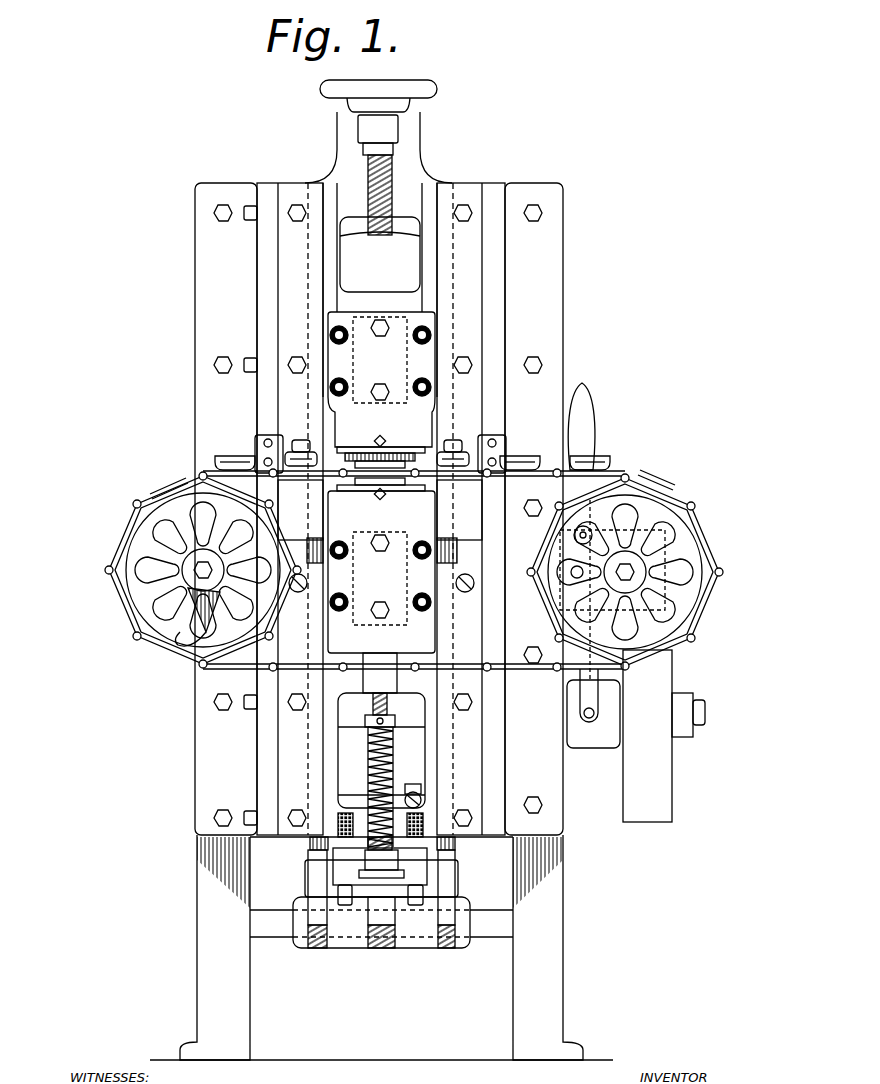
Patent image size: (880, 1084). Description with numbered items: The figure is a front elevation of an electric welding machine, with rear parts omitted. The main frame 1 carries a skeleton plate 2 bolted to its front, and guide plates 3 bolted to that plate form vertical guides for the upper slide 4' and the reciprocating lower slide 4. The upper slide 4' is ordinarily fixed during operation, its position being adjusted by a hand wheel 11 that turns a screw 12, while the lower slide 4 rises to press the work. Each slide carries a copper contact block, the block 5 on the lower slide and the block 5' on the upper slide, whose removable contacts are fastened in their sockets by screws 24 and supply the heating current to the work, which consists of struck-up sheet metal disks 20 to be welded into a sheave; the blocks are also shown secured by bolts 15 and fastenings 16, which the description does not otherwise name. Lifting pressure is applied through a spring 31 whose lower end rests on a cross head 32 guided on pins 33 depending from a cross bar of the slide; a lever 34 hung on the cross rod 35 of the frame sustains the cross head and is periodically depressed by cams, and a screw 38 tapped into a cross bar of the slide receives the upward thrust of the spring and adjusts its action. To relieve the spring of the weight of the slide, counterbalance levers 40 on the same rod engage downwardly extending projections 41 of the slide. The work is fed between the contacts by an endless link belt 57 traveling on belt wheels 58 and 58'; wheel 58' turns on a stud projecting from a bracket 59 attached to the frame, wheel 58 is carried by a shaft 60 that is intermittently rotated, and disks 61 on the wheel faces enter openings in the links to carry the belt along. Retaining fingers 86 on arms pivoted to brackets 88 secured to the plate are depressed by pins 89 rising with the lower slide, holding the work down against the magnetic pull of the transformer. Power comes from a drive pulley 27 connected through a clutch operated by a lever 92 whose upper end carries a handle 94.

The main frame 1 is at (555, 876).
The skeleton plate 2 is at (226, 190).
The guide plates 3 is at (295, 190).
The lower slide 4 is at (312, 700).
The upper slide 4' is at (422, 267).
The contact block for the lower slide 5 is at (381, 572).
The contact block for the upper slide 5' is at (381, 401).
The hand wheel 11 is at (418, 92).
The screw 12 is at (393, 168).
The die clamping bolts 15 is at (385, 330).
The holder fastening bolts 16 is at (428, 333).
The sheet metal disks 20 is at (507, 458).
The screws 24 is at (377, 440).
The drive pulley 27 is at (668, 802).
The spring 31 is at (394, 750).
The cross head 32 is at (383, 872).
The guide pins 33 is at (340, 843).
The lever 34 is at (386, 916).
The cross rod 35 is at (500, 930).
The screw 38 is at (392, 690).
The levers 40 is at (316, 906).
The downwardly extending projections 41 is at (316, 874).
The belt 57 is at (125, 528).
The belt wheel 58 is at (173, 570).
The belt wheel 58' is at (659, 587).
The bracket 59 is at (657, 543).
The shaft 60 is at (197, 573).
The disks 61 is at (625, 472).
The retaining finger 86 is at (302, 452).
The bracket 88 is at (262, 450).
The pin 89 is at (324, 500).
The lever 92 is at (590, 718).
The handle 94 is at (585, 420).